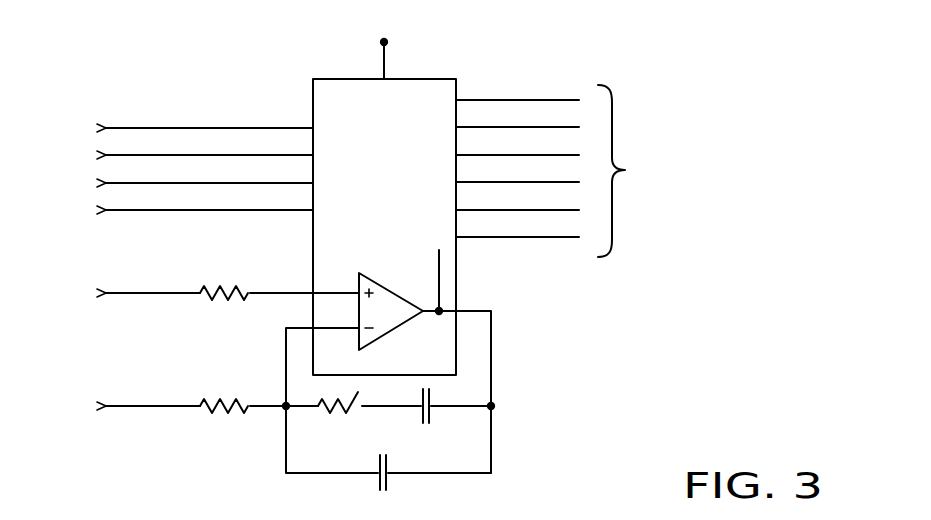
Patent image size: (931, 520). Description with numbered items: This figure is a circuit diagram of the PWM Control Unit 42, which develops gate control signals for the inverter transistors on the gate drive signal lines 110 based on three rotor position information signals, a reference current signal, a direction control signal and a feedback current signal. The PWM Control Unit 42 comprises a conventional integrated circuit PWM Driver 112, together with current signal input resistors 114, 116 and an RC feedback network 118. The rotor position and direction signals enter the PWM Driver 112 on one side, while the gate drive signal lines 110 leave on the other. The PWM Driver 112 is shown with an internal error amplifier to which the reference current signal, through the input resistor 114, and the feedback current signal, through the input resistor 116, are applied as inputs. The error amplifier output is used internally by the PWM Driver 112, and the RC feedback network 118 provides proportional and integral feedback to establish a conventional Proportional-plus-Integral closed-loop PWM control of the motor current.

The PWM Control Unit 42 is at (301, 71).
The PWM Driver 112 is at (428, 77).
The gate drive signal lines 110 is at (624, 171).
The current signal input resistor 114 is at (223, 300).
The current signal input resistor 116 is at (223, 413).
The RC feedback network 118 is at (516, 466).